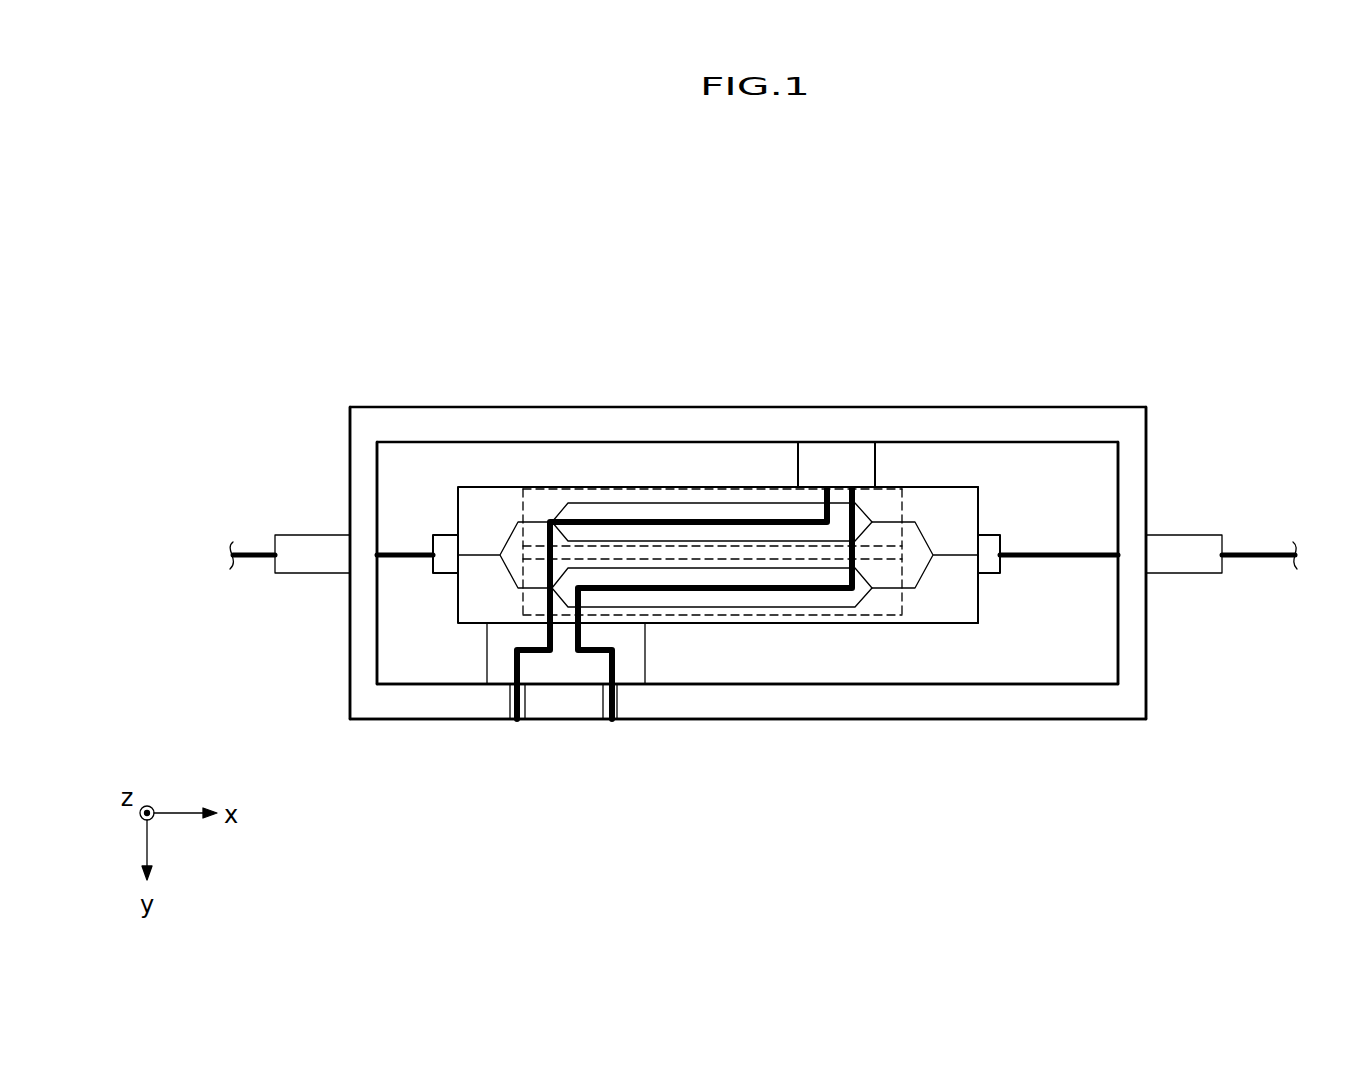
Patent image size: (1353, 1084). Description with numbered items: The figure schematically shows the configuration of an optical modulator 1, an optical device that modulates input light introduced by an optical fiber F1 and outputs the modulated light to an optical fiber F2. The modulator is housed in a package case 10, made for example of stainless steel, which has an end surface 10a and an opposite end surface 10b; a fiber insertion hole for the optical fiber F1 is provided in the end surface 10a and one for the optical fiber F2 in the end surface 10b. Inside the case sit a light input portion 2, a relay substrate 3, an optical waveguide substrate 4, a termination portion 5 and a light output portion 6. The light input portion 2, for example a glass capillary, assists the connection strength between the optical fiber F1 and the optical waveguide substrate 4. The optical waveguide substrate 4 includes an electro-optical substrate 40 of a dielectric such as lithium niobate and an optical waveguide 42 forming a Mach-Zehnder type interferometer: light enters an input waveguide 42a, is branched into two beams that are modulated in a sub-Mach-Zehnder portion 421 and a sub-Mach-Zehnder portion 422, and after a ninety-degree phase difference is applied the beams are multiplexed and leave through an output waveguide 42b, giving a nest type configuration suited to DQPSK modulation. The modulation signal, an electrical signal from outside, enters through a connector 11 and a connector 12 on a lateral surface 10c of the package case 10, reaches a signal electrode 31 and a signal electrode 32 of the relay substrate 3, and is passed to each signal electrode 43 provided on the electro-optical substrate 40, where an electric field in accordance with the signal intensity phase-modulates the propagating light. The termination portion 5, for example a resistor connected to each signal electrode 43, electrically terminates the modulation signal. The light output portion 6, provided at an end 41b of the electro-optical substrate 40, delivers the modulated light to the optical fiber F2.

The optical modulator 1 is at (1148, 278).
The light input portion 2 is at (440, 545).
The relay substrate 3 is at (635, 670).
The optical waveguide substrate 4 is at (470, 497).
The termination portion 5 is at (835, 465).
The light output portion 6 is at (998, 545).
The package case 10 is at (1090, 420).
The end surface 10a is at (347, 655).
The end surface 10b is at (1148, 454).
The lateral surface 10c is at (832, 722).
The connector 11 is at (510, 687).
The connector 12 is at (606, 687).
The signal electrode 31 is at (515, 668).
The signal electrode 32 is at (613, 668).
The electro-optical substrate 40 is at (458, 590).
The end 41b is at (980, 625).
The optical waveguide 42 is at (506, 533).
The input waveguide 42a is at (482, 560).
The output waveguide 42b is at (940, 553).
The sub-Mach-Zehnder portion 421 is at (718, 487).
The sub-Mach-Zehnder portion 422 is at (713, 620).
The signal electrode 43 is at (712, 588).
The optical fiber F1 is at (254, 550).
The optical fiber F2 is at (1262, 552).